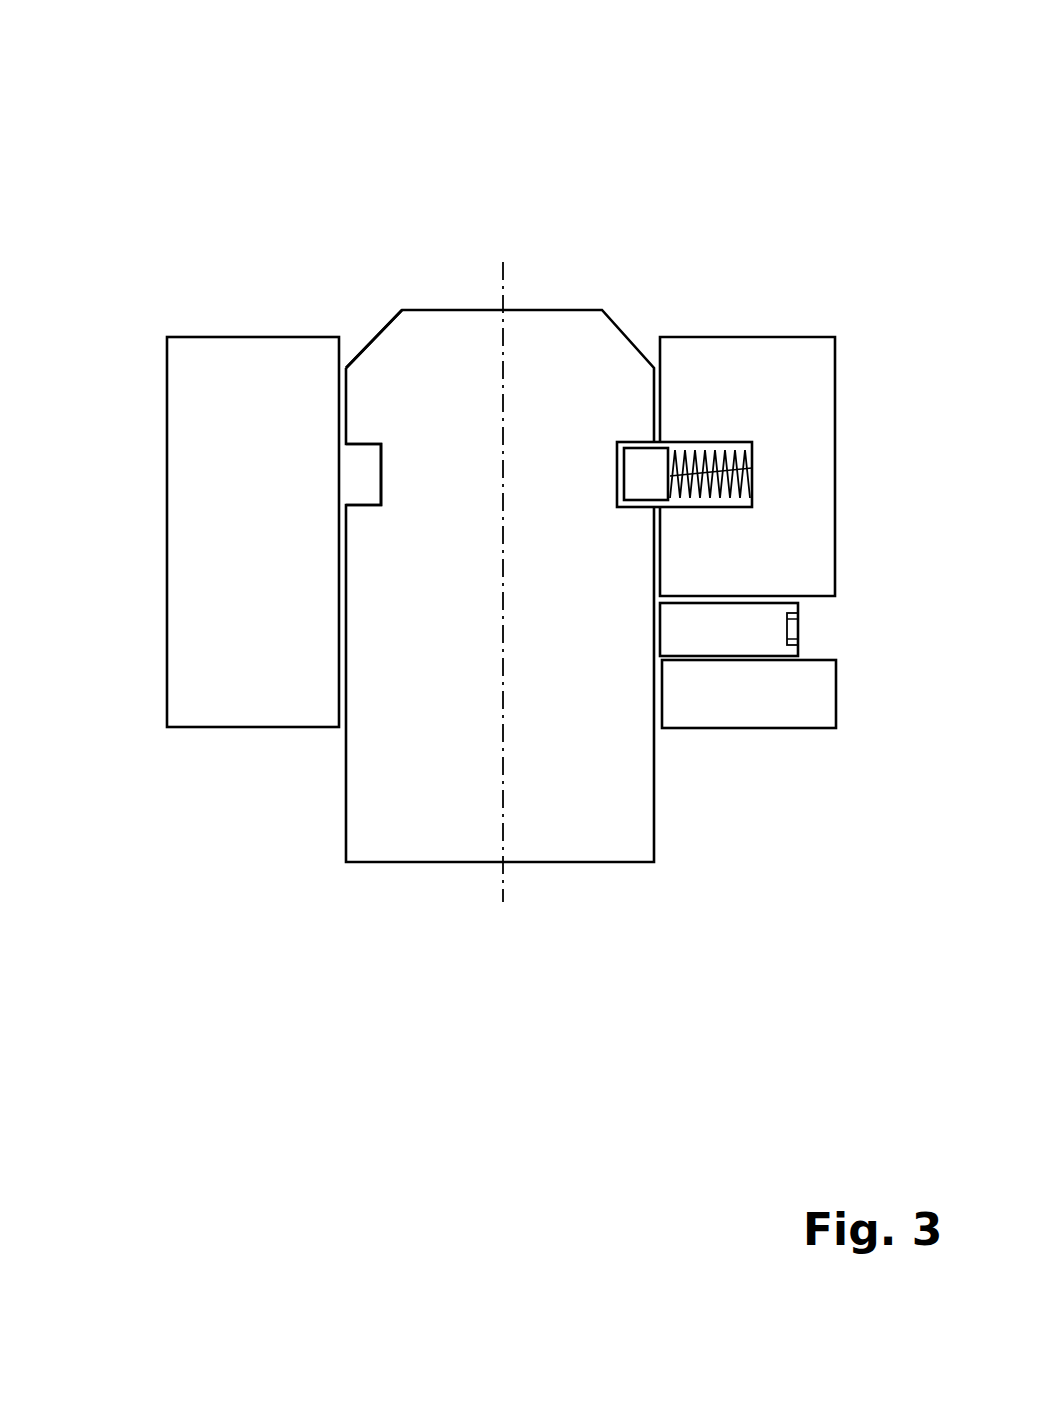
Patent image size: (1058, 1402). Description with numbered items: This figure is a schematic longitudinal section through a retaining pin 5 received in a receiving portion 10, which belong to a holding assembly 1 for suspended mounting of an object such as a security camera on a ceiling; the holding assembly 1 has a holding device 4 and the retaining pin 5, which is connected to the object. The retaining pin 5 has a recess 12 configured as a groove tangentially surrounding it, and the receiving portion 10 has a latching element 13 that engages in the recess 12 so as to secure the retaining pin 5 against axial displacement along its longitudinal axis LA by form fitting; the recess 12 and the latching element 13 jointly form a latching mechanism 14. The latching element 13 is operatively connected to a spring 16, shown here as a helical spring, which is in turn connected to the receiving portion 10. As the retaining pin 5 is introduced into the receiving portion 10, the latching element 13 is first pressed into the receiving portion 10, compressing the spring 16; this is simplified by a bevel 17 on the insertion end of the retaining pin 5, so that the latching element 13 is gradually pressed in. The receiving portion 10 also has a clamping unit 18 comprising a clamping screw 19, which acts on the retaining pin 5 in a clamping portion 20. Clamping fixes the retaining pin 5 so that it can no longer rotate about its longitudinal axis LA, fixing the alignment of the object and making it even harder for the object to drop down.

The holding assembly 1 is at (187, 150).
The holding device 4 is at (750, 337).
The retaining pin 5 is at (429, 658).
The receiving portion 10 is at (187, 420).
The recess 12 is at (361, 475).
The latching element 13 is at (645, 476).
The latching mechanism 14 is at (718, 509).
The spring 16 is at (752, 470).
The bevel 17 is at (369, 343).
The clamping unit 18 is at (702, 660).
The clamping screw 19 is at (760, 628).
The clamping portion 20 is at (655, 632).
The longitudinal axis LA is at (503, 879).